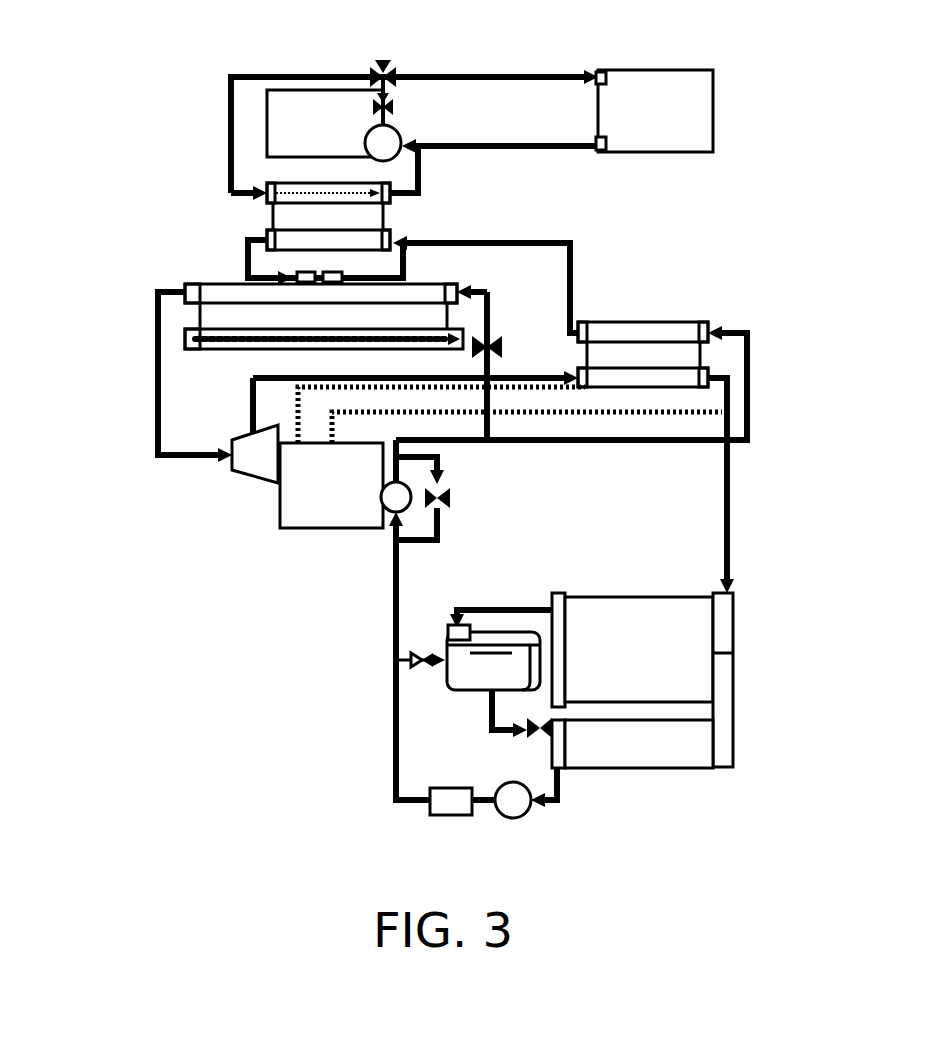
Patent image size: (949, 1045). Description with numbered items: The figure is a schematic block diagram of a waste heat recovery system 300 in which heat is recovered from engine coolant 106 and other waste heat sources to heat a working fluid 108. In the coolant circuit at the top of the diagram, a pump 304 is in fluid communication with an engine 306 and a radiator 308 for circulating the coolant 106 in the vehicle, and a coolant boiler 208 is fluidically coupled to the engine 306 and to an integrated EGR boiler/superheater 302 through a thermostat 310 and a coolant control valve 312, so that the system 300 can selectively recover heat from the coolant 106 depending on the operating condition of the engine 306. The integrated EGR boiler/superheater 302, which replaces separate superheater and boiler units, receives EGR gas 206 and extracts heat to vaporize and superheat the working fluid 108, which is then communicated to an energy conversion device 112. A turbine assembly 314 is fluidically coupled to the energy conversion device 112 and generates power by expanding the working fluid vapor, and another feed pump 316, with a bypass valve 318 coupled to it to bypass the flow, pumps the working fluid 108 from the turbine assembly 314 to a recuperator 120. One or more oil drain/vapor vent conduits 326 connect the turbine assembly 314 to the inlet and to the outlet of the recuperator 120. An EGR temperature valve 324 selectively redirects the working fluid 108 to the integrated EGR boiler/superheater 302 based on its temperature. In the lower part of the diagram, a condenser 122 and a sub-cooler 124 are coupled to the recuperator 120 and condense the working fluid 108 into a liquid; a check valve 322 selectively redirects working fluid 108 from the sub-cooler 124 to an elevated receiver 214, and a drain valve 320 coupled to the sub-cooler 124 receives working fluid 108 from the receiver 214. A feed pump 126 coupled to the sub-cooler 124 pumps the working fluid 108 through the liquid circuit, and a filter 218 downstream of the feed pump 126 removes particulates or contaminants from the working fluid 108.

The waste heat recovery system 300 is at (853, 188).
The coolant 106 is at (229, 167).
The working fluid 108 is at (246, 262).
The energy conversion device 112 is at (262, 478).
The recuperator 120 is at (612, 322).
The condenser 122 is at (605, 597).
The sub-cooler 124 is at (617, 768).
The feed pump 126 is at (516, 816).
The EGR gas 206 is at (355, 349).
The coolant boiler 208 is at (270, 213).
The receiver 214 is at (473, 690).
The filter 218 is at (450, 816).
The integrated EGR boiler/superheater 302 is at (262, 349).
The pump 304 is at (403, 135).
The engine 306 is at (280, 90).
The radiator 308 is at (714, 122).
The thermostat 310 is at (391, 112).
The coolant control valve 312 is at (386, 68).
The turbine assembly 314 is at (320, 529).
The feed pump 316 is at (389, 512).
The bypass valve 318 is at (452, 500).
The drain valve 320 is at (546, 736).
The check valve 322 is at (425, 655).
The EGR temperature valve 324 is at (496, 350).
The oil drain/vapor vent conduits 326 is at (520, 392).